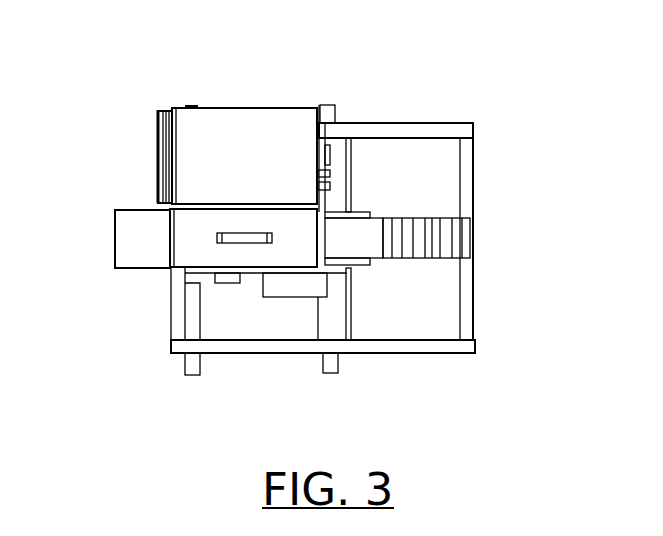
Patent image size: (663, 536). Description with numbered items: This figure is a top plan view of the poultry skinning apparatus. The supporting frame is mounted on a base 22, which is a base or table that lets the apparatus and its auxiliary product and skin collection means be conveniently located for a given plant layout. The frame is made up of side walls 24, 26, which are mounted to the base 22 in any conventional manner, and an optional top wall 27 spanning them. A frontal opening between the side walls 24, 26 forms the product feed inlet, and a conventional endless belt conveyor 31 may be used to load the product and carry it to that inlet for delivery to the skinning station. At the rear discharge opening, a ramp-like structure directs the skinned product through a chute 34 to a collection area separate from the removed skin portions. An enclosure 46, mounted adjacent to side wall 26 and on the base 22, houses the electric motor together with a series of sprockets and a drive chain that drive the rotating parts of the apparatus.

The base 22 is at (402, 118).
The side wall 24 is at (260, 353).
The side wall 26 is at (208, 200).
The top wall 27 is at (192, 248).
The endless belt conveyor 31 is at (432, 256).
The chute 34 is at (115, 238).
The enclosure 46 is at (250, 117).